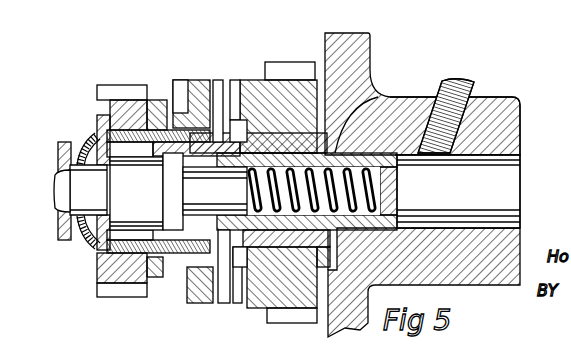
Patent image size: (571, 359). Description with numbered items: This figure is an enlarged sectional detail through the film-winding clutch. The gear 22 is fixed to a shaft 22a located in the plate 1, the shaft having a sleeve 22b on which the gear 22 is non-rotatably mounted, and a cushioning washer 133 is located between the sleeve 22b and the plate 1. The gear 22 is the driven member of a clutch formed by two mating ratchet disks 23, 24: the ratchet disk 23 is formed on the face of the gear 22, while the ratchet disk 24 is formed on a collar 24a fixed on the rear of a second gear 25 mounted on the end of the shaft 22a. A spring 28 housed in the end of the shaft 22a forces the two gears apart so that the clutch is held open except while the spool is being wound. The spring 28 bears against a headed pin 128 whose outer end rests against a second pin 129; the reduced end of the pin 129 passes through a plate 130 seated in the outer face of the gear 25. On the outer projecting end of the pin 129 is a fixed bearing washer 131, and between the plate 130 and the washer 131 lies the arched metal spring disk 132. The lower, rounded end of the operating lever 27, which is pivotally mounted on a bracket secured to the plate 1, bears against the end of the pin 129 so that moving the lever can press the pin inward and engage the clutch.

The plate 1 is at (363, 54).
The gear 22 is at (283, 85).
The shaft 22a is at (521, 167).
The sleeve 22b is at (379, 93).
The ratchet disk 23 is at (235, 80).
The ratchet disk 24 is at (217, 80).
The collar 24a is at (156, 100).
The second gear 25 is at (124, 100).
The operating lever 27 is at (55, 186).
The spring 28 is at (376, 176).
The headed pin 128 is at (187, 280).
The second pin 129 is at (93, 238).
The plate 130 is at (96, 257).
The bearing washer 131 is at (74, 140).
The arched metal spring disk 132 is at (99, 140).
The cushioning washer 133 is at (381, 97).